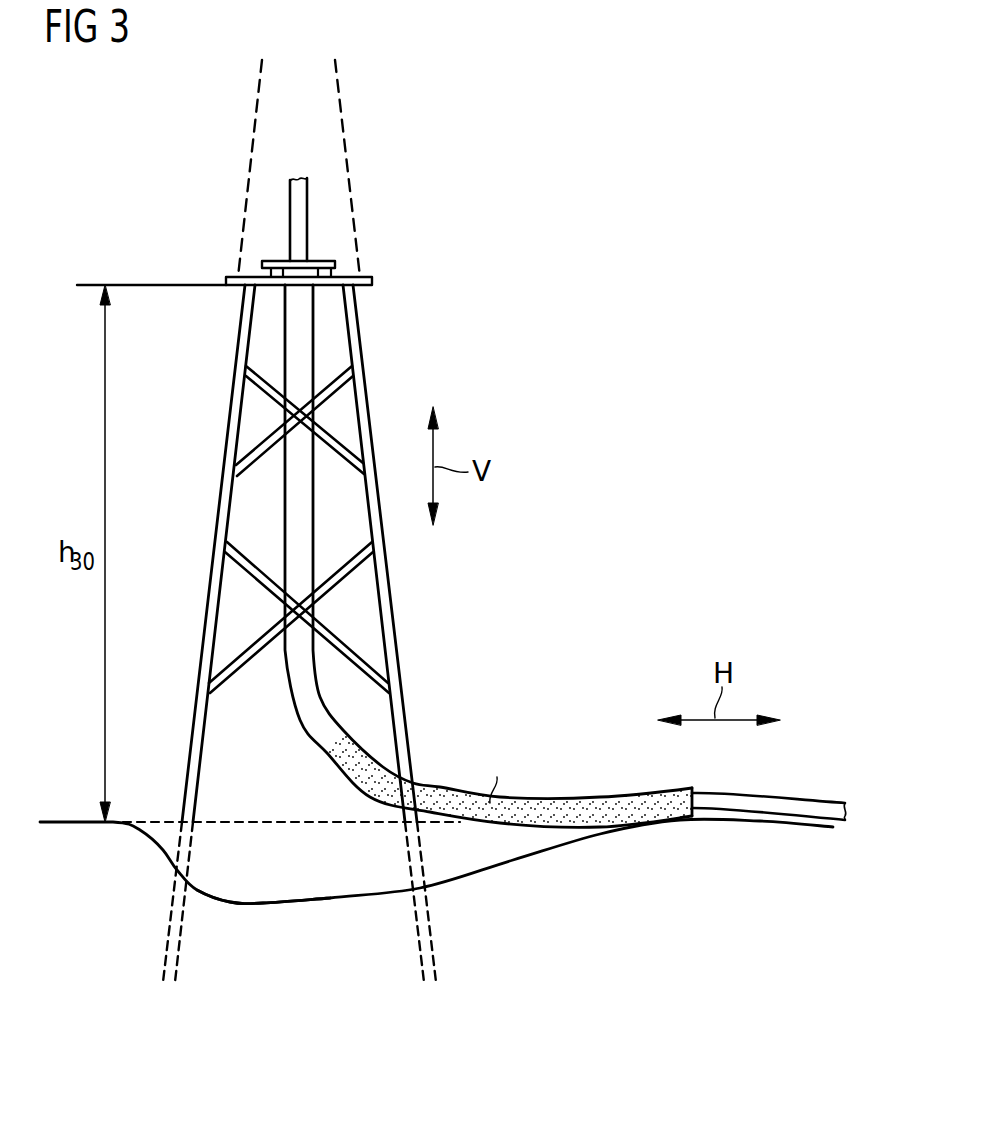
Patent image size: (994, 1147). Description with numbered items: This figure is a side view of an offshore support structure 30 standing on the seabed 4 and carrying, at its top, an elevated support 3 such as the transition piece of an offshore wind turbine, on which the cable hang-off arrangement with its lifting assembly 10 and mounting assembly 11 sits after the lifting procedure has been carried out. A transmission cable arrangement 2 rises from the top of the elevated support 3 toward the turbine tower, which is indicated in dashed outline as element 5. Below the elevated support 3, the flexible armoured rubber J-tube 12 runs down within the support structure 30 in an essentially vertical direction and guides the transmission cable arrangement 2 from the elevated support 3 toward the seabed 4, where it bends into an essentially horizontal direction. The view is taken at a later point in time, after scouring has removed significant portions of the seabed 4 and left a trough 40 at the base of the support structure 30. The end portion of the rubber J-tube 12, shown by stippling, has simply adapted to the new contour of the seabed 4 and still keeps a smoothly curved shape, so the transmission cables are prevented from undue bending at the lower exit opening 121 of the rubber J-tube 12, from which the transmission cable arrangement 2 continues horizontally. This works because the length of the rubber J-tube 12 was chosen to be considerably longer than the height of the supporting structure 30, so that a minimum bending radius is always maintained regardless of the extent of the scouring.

The transmission cable arrangement 2 is at (298, 178).
The elevated support 3 is at (370, 280).
The seabed 4 is at (68, 822).
The wind turbine tower 5 is at (347, 225).
The lifting assembly 10 is at (259, 239).
The mounting assembly 11 is at (272, 260).
The rubber J-tube 12 is at (300, 717).
The offshore support structure 30 is at (387, 607).
The trough 40 is at (292, 893).
The lower exit opening 121 is at (695, 800).